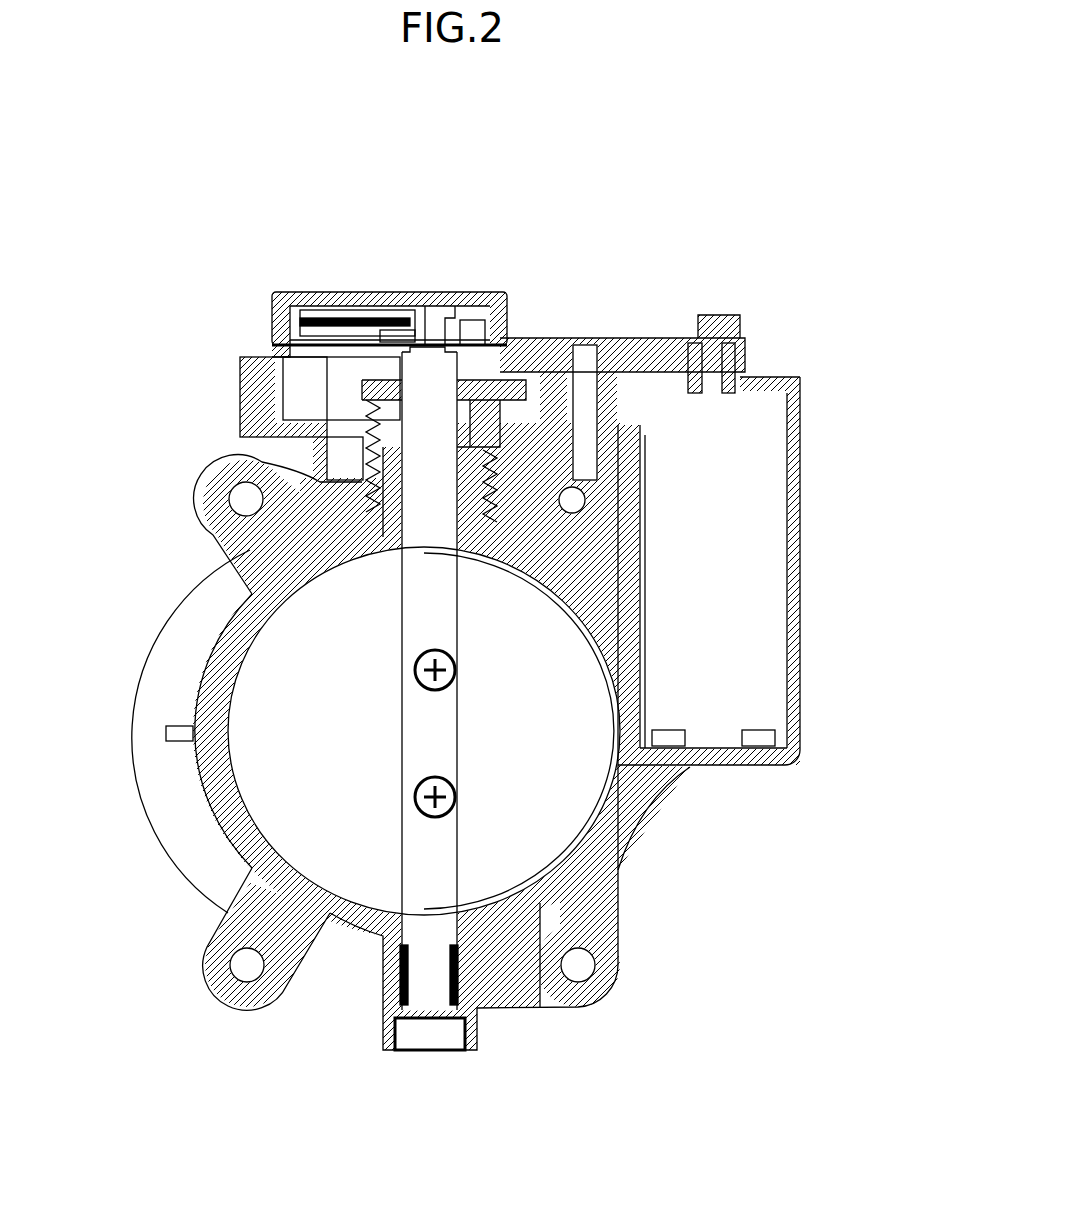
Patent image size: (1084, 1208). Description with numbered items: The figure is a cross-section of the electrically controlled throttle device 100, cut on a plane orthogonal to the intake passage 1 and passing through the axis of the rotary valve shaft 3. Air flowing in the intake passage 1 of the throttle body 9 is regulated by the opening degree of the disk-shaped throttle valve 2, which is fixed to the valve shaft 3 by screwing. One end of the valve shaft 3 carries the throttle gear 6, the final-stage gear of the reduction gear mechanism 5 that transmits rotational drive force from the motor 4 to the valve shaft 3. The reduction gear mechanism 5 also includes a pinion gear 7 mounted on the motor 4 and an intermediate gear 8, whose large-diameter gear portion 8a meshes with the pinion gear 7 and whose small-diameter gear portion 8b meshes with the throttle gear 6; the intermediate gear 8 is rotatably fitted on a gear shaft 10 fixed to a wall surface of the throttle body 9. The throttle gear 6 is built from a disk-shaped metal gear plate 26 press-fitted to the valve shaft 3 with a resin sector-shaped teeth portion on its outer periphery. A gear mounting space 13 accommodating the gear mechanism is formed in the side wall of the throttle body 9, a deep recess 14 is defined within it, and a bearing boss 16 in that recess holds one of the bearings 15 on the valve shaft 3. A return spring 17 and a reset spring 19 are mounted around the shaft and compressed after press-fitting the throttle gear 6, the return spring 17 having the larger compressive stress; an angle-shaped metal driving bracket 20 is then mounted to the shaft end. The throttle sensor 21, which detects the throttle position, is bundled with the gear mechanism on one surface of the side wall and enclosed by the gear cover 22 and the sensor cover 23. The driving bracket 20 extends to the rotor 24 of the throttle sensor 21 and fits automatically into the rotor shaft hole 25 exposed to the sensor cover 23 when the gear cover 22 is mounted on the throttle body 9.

The electrically controlled throttle device 100 is at (278, 148).
The intake passage 1 is at (338, 892).
The throttle valve 2 is at (515, 872).
The valve shaft 3 is at (430, 988).
The motor 4 is at (725, 693).
The reduction gear mechanism 5 is at (538, 340).
The throttle gear 6 is at (515, 362).
The pinion gear 7 is at (770, 378).
The intermediate gear 8 is at (583, 345).
The large-diameter gear portion 8a is at (655, 335).
The small-diameter gear portion 8b is at (748, 328).
The throttle body 9 is at (212, 590).
The gear shaft 10 is at (640, 492).
The gear mounting space 13 is at (300, 352).
The deep recess 14 is at (345, 415).
The bearings 15 is at (312, 488).
The bearing boss 16 is at (335, 440).
The return spring 17 is at (320, 465).
The reset spring 19 is at (590, 499).
The driving bracket 20 is at (408, 345).
The throttle sensor 21 is at (368, 345).
The gear cover 22 is at (285, 300).
The sensor cover 23 is at (330, 348).
The rotor 24 is at (390, 345).
The rotor shaft hole 25 is at (437, 345).
The gear plate 26 is at (500, 346).